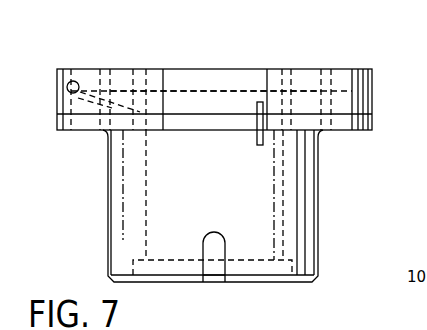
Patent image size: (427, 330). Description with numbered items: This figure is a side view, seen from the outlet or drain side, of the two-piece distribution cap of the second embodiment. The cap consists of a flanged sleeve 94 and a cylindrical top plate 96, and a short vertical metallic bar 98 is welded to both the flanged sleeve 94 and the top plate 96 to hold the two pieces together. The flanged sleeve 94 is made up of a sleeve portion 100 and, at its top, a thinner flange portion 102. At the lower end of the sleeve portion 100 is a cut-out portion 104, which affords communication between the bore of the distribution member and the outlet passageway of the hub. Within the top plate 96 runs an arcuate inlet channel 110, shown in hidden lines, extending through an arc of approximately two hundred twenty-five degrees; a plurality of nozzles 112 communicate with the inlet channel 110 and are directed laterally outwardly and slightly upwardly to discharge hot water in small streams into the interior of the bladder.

The flanged sleeve 94 is at (321, 218).
The cylindrical top plate 96 is at (372, 93).
The short vertical metallic bar 98 is at (257, 146).
The sleeve portion 100 is at (231, 246).
The flange portion 102 is at (372, 127).
The cut-out portion 104 is at (220, 278).
The arcuate inlet channel 110 is at (184, 90).
The nozzles 112 is at (73, 81).